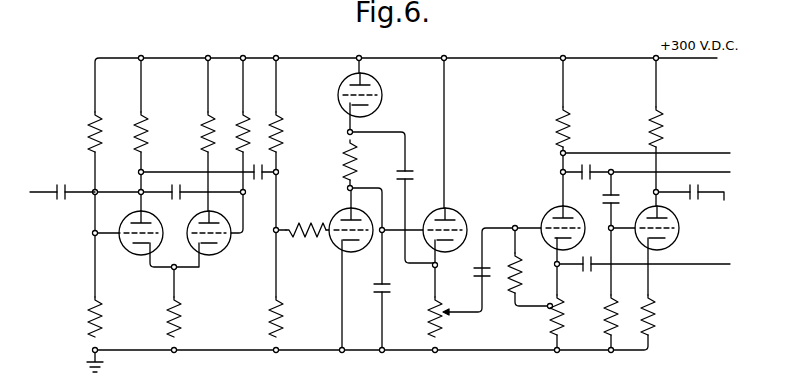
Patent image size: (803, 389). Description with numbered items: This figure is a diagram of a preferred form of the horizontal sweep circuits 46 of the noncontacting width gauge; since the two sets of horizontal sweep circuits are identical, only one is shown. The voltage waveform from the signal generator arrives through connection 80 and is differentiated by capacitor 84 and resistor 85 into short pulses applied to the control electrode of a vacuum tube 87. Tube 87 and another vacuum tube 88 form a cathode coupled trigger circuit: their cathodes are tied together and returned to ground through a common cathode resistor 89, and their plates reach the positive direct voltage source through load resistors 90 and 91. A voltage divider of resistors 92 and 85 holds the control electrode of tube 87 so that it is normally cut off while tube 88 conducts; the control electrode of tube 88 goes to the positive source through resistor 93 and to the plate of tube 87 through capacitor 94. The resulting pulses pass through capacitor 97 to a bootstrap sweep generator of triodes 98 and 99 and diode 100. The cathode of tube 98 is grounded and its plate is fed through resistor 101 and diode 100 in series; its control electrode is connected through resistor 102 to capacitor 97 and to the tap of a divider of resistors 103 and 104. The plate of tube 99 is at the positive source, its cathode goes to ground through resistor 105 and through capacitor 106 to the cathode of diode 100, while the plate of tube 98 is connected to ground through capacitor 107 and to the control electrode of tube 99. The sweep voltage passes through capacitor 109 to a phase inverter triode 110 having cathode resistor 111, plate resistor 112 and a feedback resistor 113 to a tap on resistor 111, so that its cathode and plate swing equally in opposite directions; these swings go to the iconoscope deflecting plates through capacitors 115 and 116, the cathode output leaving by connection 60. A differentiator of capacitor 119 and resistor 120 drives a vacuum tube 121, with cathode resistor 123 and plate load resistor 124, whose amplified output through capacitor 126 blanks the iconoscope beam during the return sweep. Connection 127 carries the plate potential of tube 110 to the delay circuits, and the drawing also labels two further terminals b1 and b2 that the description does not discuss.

The horizontal sweep circuits 46 is at (498, 375).
The connection 60 is at (724, 266).
The connection 80 is at (52, 189).
The capacitor 84 is at (60, 200).
The resistor 85 is at (104, 317).
The vacuum tube 87 is at (122, 248).
The vacuum tube 88 is at (228, 250).
The common cathode resistor 89 is at (181, 316).
The load resistor 90 is at (148, 127).
The load resistor 91 is at (200, 139).
The resistor 92 is at (104, 132).
The resistor 93 is at (250, 123).
The capacitor 94 is at (174, 184).
The capacitor 97 is at (257, 184).
The triode 98 is at (360, 252).
The triode 99 is at (460, 212).
The diode 100 is at (382, 95).
The resistor 101 is at (357, 160).
The resistor 102 is at (306, 222).
The resistor 103 is at (283, 134).
The resistor 104 is at (284, 316).
The resistor 105 is at (432, 327).
The capacitor 106 is at (412, 172).
The capacitor 107 is at (392, 291).
The capacitor 109 is at (476, 274).
The triode 110 is at (549, 214).
The cathode resistor 111 is at (573, 315).
The resistor 112 is at (571, 124).
The resistor 113 is at (513, 296).
The capacitor 115 is at (586, 273).
The capacitor 116 is at (584, 168).
The capacitor 119 is at (623, 200).
The resistor 120 is at (607, 333).
The vacuum tube 121 is at (679, 241).
The cathode resistor 123 is at (656, 322).
The plate load resistor 124 is at (663, 112).
The capacitor 126 is at (694, 200).
The connection 127 is at (698, 153).
The output terminal b1 is at (694, 171).
The output terminal b2 is at (724, 200).